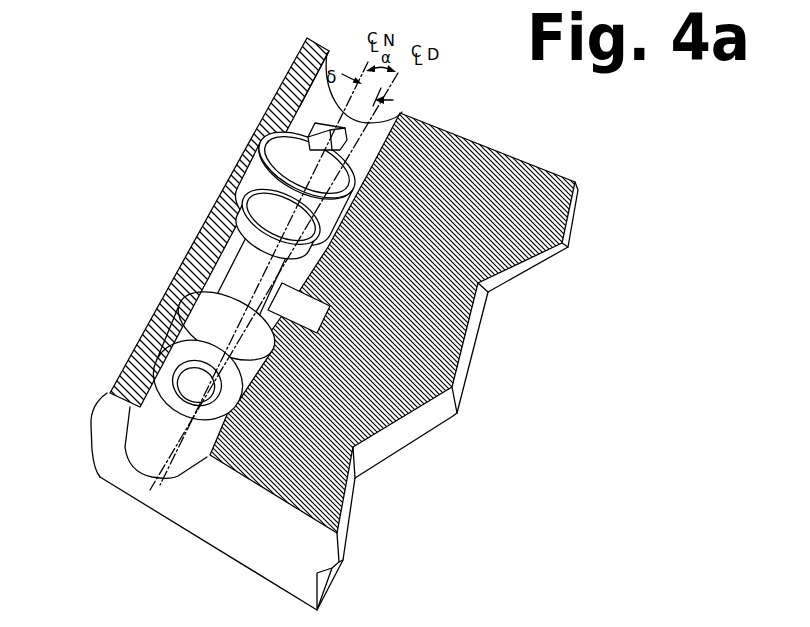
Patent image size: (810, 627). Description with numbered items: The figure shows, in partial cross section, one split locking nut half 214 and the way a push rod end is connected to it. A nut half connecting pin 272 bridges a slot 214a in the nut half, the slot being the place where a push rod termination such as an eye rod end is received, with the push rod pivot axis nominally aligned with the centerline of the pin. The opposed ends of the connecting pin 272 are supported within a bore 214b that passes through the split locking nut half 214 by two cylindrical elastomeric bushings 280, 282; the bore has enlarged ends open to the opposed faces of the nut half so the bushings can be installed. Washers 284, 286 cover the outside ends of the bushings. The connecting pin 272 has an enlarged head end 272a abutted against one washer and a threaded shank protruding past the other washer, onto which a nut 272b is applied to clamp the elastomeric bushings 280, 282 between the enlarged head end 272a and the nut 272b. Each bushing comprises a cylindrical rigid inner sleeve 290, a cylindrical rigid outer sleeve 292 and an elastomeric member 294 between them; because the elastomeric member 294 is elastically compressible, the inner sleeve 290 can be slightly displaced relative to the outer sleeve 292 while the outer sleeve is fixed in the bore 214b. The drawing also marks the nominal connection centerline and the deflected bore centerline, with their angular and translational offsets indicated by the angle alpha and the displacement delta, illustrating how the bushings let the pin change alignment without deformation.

The split locking nut half 214 is at (185, 502).
The slot 214a is at (200, 230).
The bore 214b is at (143, 440).
The nut half connecting pin 272 is at (255, 248).
The enlarged head end 272a is at (172, 372).
The nut 272b is at (330, 137).
The cylindrical elastomeric bushing 280 is at (262, 158).
The cylindrical elastomeric bushing 282 is at (200, 286).
The washer 284 is at (273, 117).
The washer 286 is at (150, 325).
The cylindrical rigid inner sleeve 290 is at (262, 222).
The cylindrical rigid outer sleeve 292 is at (280, 187).
The elastomeric member 294 is at (257, 200).